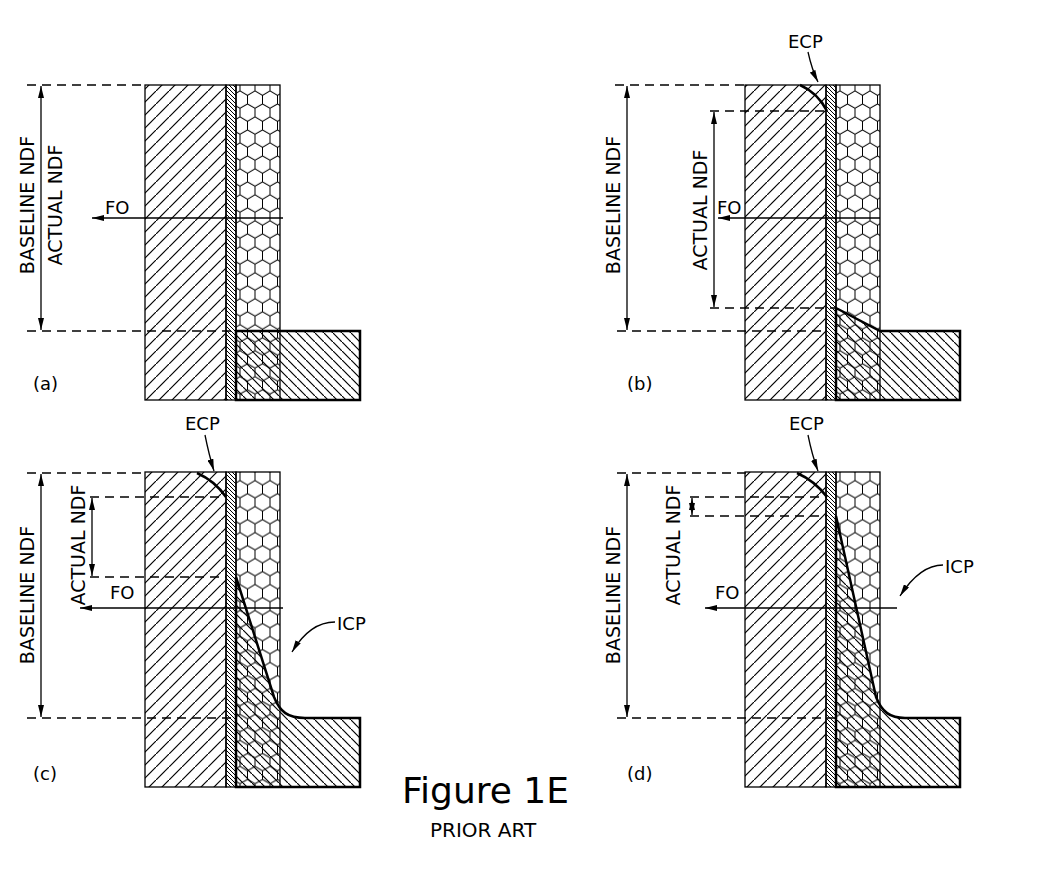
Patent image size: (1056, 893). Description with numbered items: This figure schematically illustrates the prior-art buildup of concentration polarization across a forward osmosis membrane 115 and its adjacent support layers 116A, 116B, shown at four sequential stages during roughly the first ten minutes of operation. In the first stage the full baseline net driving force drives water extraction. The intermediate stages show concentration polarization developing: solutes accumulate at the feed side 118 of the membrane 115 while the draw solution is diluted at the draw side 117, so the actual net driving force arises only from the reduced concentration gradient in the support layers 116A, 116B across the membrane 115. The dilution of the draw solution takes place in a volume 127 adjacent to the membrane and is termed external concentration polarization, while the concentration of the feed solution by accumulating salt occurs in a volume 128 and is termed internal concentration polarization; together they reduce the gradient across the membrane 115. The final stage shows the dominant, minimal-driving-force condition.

The membrane 115 is at (230, 84).
The support layer 116A is at (266, 84).
The support layer 116B is at (190, 84).
The draw side 117 is at (528, 398).
The feed side 118 is at (633, 517).
The volume 127 is at (193, 772).
The volume 128 is at (259, 773).